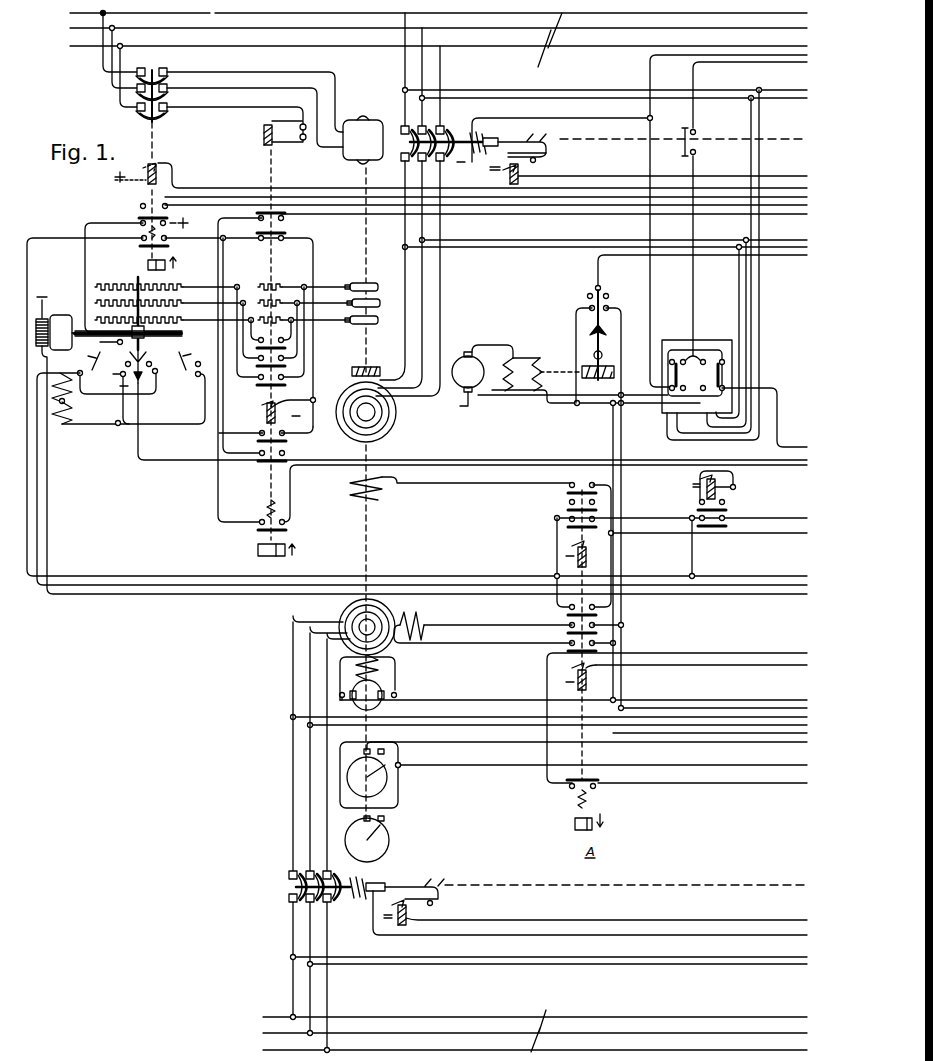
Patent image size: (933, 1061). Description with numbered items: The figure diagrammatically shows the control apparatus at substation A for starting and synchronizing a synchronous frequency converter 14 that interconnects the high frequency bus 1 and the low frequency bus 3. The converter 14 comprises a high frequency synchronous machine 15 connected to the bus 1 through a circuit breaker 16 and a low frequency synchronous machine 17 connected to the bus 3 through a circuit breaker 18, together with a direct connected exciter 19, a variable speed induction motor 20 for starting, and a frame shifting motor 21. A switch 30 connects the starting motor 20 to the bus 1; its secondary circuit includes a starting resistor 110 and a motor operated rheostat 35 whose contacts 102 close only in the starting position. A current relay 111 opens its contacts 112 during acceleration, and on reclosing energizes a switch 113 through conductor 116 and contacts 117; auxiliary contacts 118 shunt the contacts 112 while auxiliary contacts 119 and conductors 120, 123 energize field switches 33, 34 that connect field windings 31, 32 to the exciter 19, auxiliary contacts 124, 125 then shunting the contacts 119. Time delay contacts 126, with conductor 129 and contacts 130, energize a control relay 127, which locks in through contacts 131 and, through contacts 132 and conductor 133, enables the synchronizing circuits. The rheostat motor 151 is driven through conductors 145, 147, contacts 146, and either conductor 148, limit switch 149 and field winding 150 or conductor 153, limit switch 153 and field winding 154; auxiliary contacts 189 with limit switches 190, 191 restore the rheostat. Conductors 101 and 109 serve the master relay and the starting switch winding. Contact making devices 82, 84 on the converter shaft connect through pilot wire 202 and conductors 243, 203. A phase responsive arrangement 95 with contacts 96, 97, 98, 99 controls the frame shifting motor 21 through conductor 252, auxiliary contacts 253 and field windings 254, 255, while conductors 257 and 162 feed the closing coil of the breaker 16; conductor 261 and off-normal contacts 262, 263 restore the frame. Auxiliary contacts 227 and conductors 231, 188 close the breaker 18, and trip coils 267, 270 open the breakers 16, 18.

The high frequency bus 1 is at (438, 40).
The low frequency bus 3 is at (535, 1022).
The synchronous frequency converter 14 is at (388, 301).
The high frequency synchronous machine 15 is at (397, 412).
The circuit breaker 16 is at (470, 124).
The low frequency synchronous machine 17 is at (385, 617).
The circuit breaker 18 is at (292, 880).
The direct connected exciter 19 is at (358, 691).
The variable speed induction motor 20 is at (371, 149).
The frame shifting motor 21 is at (460, 385).
The switch 30 is at (158, 116).
The field winding 31 is at (348, 490).
The field winding 32 is at (424, 624).
The field switch 33 is at (573, 548).
The field switch 34 is at (588, 681).
The motor operated rheostat 35 is at (193, 280).
The contact making device 82 is at (389, 845).
The contact making device 84 is at (364, 757).
The phase responsive arrangement 95 is at (710, 265).
The contacts 96 is at (693, 382).
The contacts 97 is at (693, 363).
The contacts 98 is at (676, 368).
The contacts 99 is at (720, 384).
The conductor 101 is at (783, 465).
The contacts 102 is at (146, 376).
The conductor 109 is at (776, 177).
The starting resistor 110 is at (276, 284).
The current relay 111 is at (263, 126).
The contacts 112 is at (265, 242).
The switch 113 is at (265, 408).
The conductor 116 is at (788, 575).
The contacts 117 is at (138, 240).
The auxiliary contacts 118 is at (284, 435).
The auxiliary contacts 119 is at (258, 454).
The conductor 120 is at (708, 542).
The conductor 123 is at (788, 665).
The auxiliary contacts 124 is at (568, 519).
The auxiliary contacts 125 is at (596, 621).
The time delay contacts 126 is at (263, 518).
The control relay 127 is at (702, 491).
The conductor 129 is at (775, 216).
The contacts 130 is at (284, 219).
The contacts 131 is at (697, 502).
The contacts 132 is at (726, 517).
The conductor 133 is at (790, 517).
The conductor 145 is at (724, 197).
The contacts 146 is at (140, 206).
The conductor 147 is at (800, 207).
The conductor 148 is at (791, 594).
The limit switch 149 is at (194, 353).
The field winding 150 is at (73, 411).
The motor 151 is at (69, 340).
The conductor 153 is at (91, 366).
The field winding 154 is at (56, 381).
The conductor 162 is at (746, 57).
The conductor 188 is at (788, 654).
The auxiliary contacts 189 is at (138, 225).
The limit switch 190 is at (113, 397).
The limit switch 191 is at (160, 373).
The pilot wire 202 is at (757, 766).
The conductor 203 is at (792, 743).
The auxiliary contacts 227 is at (573, 791).
The conductor 231 is at (786, 784).
The conductor 243 is at (748, 743).
The conductor 252 is at (787, 60).
The auxiliary contacts 253 is at (696, 131).
The field winding 254 is at (586, 374).
The field winding 255 is at (546, 368).
The conductor 257 is at (790, 448).
The conductor 261 is at (786, 255).
The off-normal frame shifting contacts 262 is at (589, 294).
The off-normal frame shifting contacts 263 is at (609, 297).
The trip coil 267 is at (508, 178).
The trip coil 270 is at (410, 912).